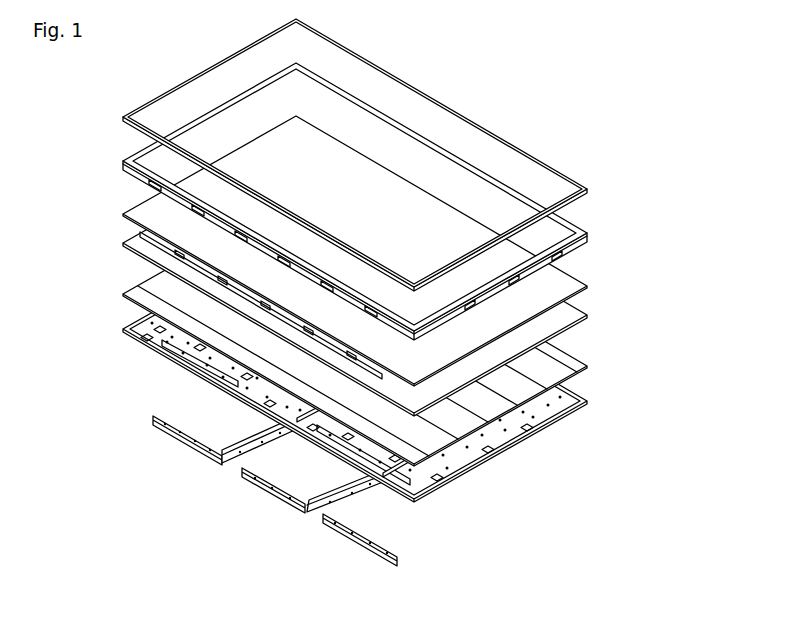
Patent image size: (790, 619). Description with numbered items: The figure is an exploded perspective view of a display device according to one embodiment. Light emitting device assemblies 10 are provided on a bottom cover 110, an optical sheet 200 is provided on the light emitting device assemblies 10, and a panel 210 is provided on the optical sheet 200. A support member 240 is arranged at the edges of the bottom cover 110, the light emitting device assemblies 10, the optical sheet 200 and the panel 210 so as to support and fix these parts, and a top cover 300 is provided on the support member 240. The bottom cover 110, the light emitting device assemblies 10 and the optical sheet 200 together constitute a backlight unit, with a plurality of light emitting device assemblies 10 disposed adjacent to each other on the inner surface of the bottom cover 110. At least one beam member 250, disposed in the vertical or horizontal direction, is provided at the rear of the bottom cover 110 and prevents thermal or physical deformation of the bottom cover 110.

The top cover 300 is at (596, 175).
The support member 240 is at (596, 221).
The panel 210 is at (596, 276).
The optical sheet 200 is at (596, 312).
The light emitting device assemblies 10 is at (596, 360).
The bottom cover 110 is at (596, 399).
The beam member 250 is at (270, 492).